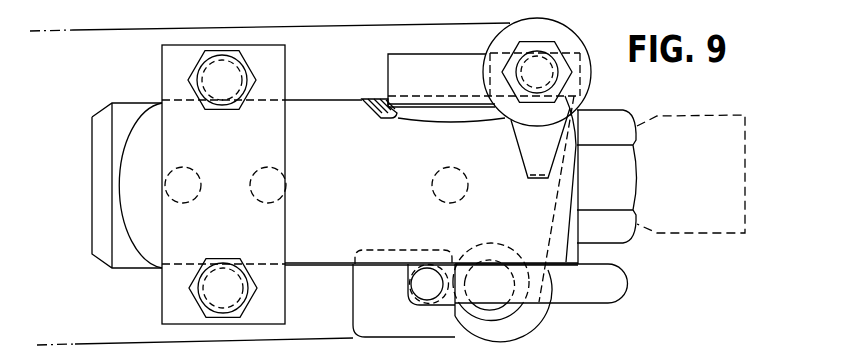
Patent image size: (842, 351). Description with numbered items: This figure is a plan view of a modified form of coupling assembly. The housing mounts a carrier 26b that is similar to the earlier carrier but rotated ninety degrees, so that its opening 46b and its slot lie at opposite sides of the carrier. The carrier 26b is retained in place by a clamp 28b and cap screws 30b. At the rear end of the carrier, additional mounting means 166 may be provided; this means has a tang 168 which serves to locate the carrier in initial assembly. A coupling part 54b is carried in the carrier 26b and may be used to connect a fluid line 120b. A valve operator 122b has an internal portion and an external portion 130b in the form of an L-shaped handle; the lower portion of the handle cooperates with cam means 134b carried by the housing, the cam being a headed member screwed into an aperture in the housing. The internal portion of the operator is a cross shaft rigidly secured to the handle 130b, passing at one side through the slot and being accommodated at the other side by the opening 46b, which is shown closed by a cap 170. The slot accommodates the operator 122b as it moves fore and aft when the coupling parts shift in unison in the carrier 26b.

The carrier 26b is at (102, 256).
The clamp 28b is at (163, 314).
The cap screws 30b is at (240, 68).
The opening 46b is at (393, 119).
The coupling part 54b is at (627, 113).
The fluid line 120b is at (741, 113).
The valve operator 122b is at (548, 312).
The external portion (handle) 130b is at (628, 290).
The cam means 134b is at (503, 322).
The additional mounting means 166 is at (558, 33).
The tang 168 is at (531, 152).
The cap 170 is at (393, 64).